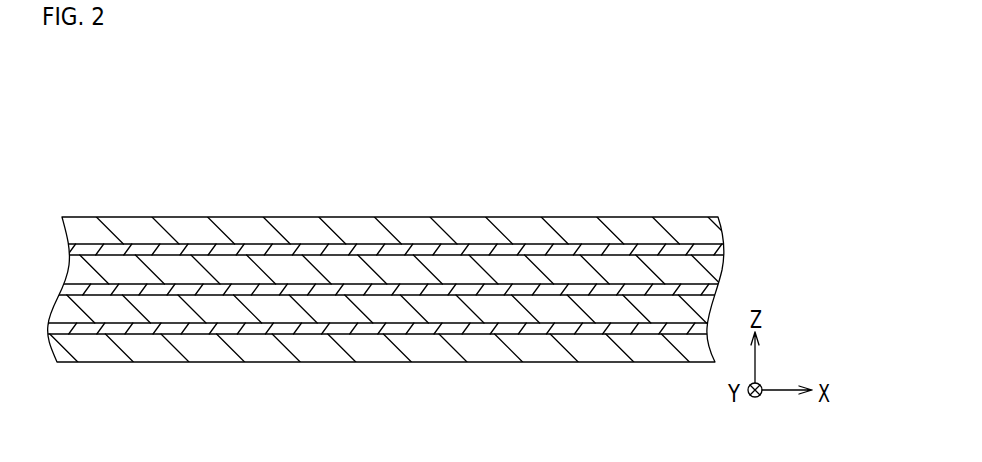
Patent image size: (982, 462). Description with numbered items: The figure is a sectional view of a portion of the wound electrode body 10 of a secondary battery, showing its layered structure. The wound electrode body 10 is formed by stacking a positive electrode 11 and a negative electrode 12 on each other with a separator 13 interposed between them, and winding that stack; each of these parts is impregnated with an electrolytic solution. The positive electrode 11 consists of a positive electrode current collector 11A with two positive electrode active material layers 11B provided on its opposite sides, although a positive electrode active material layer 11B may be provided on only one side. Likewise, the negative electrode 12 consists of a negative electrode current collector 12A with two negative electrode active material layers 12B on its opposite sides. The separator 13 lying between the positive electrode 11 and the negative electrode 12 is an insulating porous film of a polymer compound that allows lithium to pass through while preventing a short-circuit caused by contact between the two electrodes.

The wound electrode body 10 is at (722, 118).
The positive electrode 11 is at (300, 121).
The positive electrode current collector 11A is at (118, 250).
The positive electrode active material layer 11B is at (225, 273).
The negative electrode 12 is at (600, 121).
The negative electrode current collector 12A is at (415, 329).
The negative electrode active material layer 12B is at (513, 345).
The separator 13 is at (670, 289).